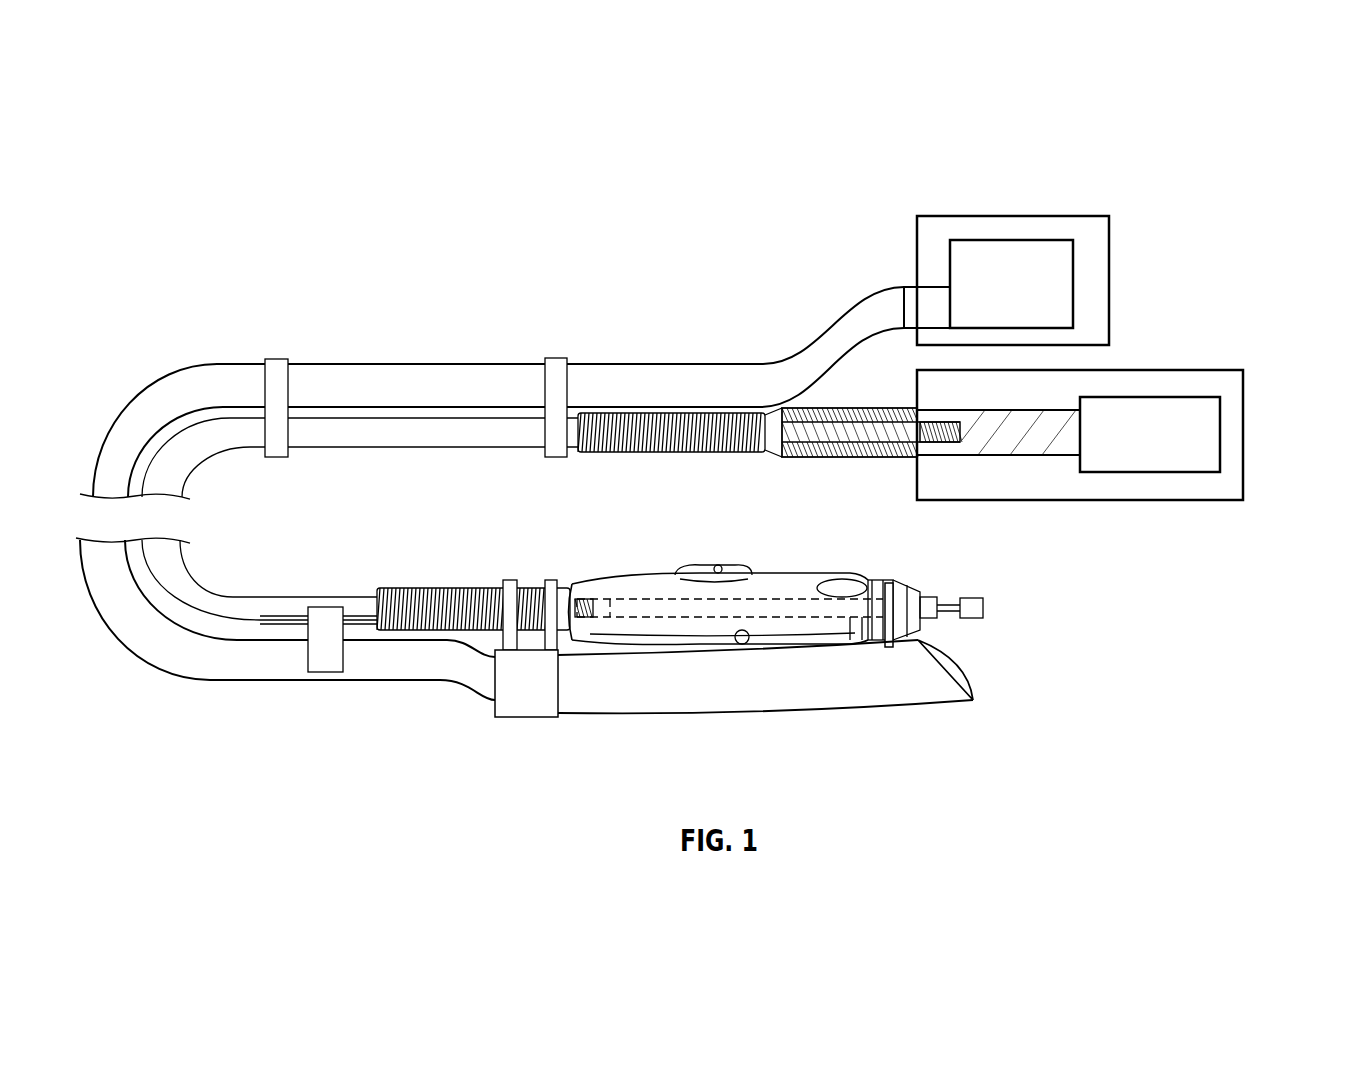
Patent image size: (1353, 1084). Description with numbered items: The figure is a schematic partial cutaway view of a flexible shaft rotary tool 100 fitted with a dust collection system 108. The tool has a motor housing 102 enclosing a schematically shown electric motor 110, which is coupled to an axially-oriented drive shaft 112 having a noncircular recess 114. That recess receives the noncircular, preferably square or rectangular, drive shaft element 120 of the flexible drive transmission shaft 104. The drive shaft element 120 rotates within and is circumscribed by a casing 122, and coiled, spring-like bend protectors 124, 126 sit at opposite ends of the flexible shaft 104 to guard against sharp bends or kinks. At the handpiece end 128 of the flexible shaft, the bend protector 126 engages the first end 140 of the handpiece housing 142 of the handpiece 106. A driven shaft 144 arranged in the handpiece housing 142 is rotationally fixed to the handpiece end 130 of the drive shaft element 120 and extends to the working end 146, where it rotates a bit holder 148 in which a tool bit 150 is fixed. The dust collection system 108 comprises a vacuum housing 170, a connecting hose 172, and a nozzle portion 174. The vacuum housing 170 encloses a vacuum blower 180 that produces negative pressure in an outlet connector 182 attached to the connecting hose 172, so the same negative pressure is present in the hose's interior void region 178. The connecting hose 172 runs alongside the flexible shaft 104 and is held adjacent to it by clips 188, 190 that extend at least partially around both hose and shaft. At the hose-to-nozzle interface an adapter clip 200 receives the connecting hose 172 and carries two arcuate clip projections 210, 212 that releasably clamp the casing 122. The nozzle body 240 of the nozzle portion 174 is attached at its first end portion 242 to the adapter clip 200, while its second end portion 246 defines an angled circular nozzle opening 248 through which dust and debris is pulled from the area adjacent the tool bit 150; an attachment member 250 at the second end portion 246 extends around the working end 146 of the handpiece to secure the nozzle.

The flexible shaft rotary tool 100 is at (340, 322).
The motor housing 102 is at (1268, 510).
The flexible drive transmission shaft 104 is at (337, 470).
The handpiece 106 is at (703, 533).
The dust collection system 108 is at (568, 257).
The electric motor 110 is at (1147, 453).
The drive shaft 112 is at (1043, 435).
The noncircular recess 114 is at (928, 430).
The drive shaft element 120 is at (925, 438).
The casing 122 is at (410, 437).
The bend protector 124 is at (728, 453).
The bend protector 126 is at (537, 590).
The handpiece end 128 is at (498, 570).
The handpiece end 130 is at (578, 597).
The first end 140 is at (583, 563).
The handpiece housing 142 is at (807, 572).
The driven shaft 144 is at (660, 598).
The working end 146 is at (898, 562).
The bit holder 148 is at (923, 593).
The tool bit 150 is at (977, 595).
The vacuum housing 170 is at (1015, 214).
The connecting hose 172 is at (620, 380).
The nozzle portion 174 is at (527, 748).
The void region 178 is at (432, 386).
The vacuum blower 180 is at (1065, 240).
The outlet connector 182 is at (903, 290).
The clip 188 is at (273, 360).
The clip 190 is at (320, 667).
The adapter clip 200 is at (540, 707).
The clip projection 210 is at (507, 635).
The clip projection 212 is at (552, 635).
The nozzle body 240 is at (718, 698).
The first end portion 242 is at (585, 729).
The second end portion 246 is at (945, 718).
The nozzle opening 248 is at (965, 658).
The attachment member 250 is at (877, 633).